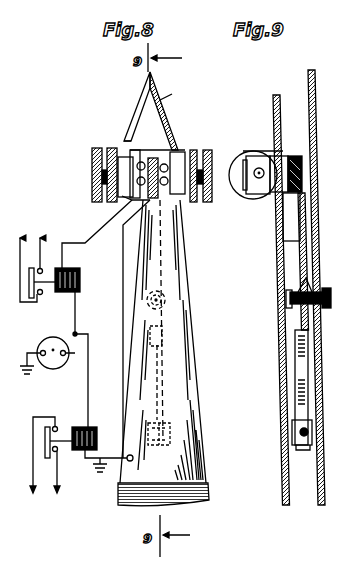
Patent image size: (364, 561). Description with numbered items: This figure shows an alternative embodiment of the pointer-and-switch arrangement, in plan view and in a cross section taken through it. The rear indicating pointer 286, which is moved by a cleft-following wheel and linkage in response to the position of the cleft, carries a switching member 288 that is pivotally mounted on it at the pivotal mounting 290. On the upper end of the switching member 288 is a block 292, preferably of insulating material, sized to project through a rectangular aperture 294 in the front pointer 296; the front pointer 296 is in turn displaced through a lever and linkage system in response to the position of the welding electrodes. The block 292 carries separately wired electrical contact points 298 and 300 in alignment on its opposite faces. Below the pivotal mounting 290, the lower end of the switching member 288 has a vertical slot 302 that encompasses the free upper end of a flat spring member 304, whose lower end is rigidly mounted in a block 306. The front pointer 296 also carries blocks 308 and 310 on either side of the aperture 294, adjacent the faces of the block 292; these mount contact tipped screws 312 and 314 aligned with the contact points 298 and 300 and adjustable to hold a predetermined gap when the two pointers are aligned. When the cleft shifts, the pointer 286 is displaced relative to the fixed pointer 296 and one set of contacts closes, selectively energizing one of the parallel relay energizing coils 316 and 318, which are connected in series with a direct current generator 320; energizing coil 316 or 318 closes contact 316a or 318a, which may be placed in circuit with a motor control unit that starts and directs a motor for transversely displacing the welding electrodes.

In FIG. 8, the rear indicating pointer 286 is at (163, 99).
In FIG. 9, the rear indicating pointer 286 is at (308, 72).
In FIG. 8, the switching member 288 is at (160, 253).
In FIG. 9, the switching member 288 is at (299, 242).
In FIG. 8, the pivotal mounting 290 is at (168, 300).
In FIG. 9, the pivotal mounting 290 is at (292, 281).
In FIG. 8, the block 292 is at (165, 143).
In FIG. 9, the block 292 is at (287, 153).
In FIG. 8, the rectangular aperture 294 is at (122, 196).
In FIG. 9, the rectangular aperture 294 is at (274, 152).
In FIG. 8, the front pointer 296 is at (147, 105).
In FIG. 9, the front pointer 296 is at (273, 98).
In FIG. 8, the electrical contact point 298 is at (124, 139).
In FIG. 8, the electrical contact point 300 is at (166, 150).
In FIG. 8, the vertical slot 302 is at (165, 340).
In FIG. 9, the vertical slot 302 is at (296, 331).
In FIG. 8, the flat spring member 304 is at (158, 390).
In FIG. 9, the flat spring member 304 is at (297, 393).
In FIG. 8, the block 306 is at (172, 433).
In FIG. 9, the block 306 is at (300, 447).
In FIG. 8, the block 308 is at (100, 165).
In FIG. 8, the block 310 is at (178, 151).
In FIG. 8, the contact tipped screw 312 is at (106, 185).
In FIG. 8, the contact tipped screw 314 is at (226, 174).
In FIG. 8, the relay energizing coil 316 is at (82, 452).
In FIG. 8, the contact 316a is at (50, 441).
In FIG. 8, the relay energizing coil 318 is at (68, 268).
In FIG. 8, the contact 318a is at (50, 294).
In FIG. 8, the direct current generator 320 is at (52, 362).